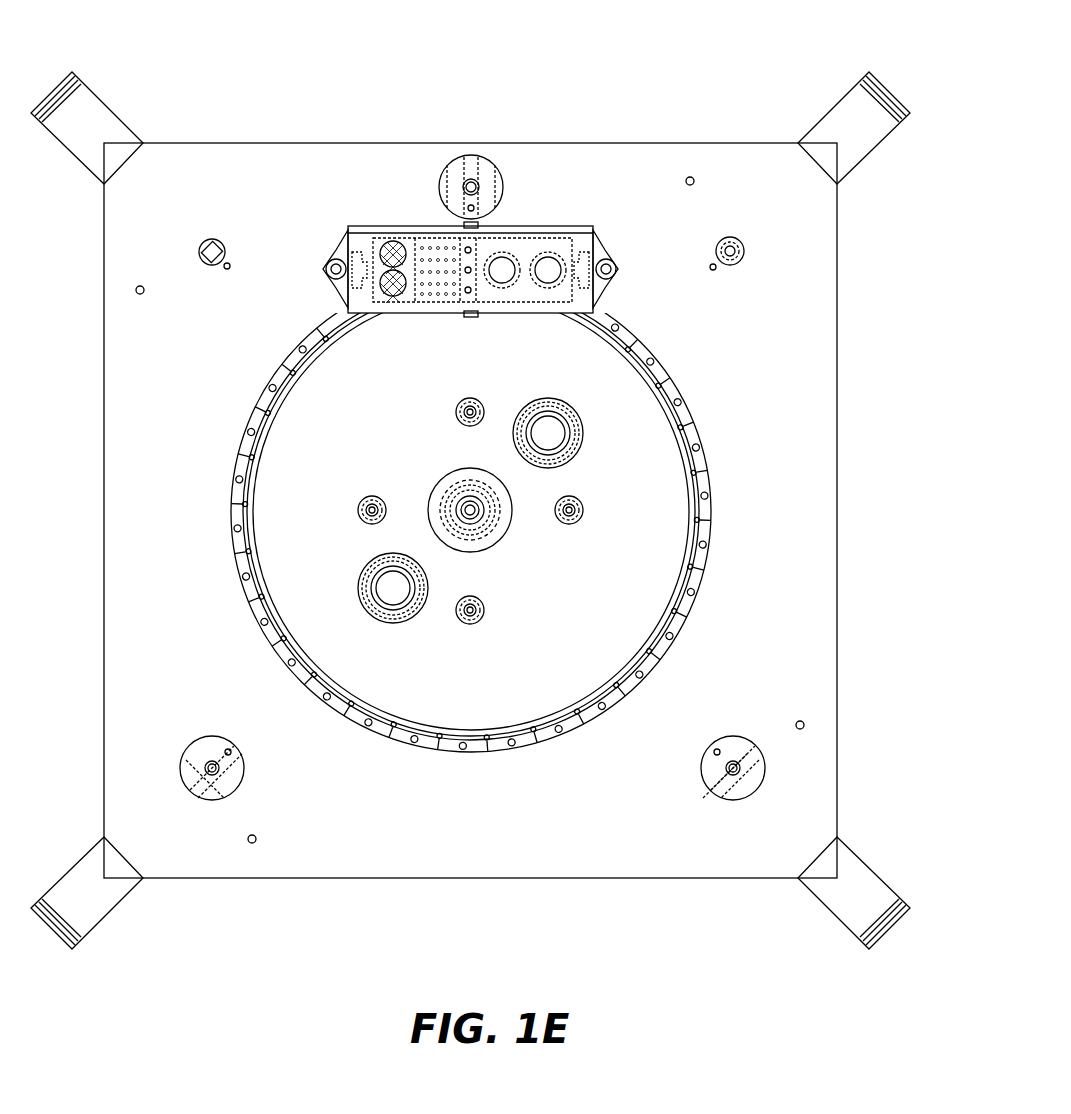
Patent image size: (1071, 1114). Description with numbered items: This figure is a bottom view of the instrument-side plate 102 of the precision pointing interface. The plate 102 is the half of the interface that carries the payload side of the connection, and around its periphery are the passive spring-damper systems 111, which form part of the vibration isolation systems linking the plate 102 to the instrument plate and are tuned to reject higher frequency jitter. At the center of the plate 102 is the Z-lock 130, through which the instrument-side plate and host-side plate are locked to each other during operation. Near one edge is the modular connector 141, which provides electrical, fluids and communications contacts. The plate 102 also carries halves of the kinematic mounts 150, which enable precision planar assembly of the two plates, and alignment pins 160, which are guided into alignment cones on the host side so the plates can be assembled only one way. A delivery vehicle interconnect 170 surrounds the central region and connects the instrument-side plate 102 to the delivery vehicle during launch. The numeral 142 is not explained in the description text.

The instrument-side plate 102 is at (770, 335).
The passive spring-damper system 111 is at (860, 112).
The Z-lock 130 is at (470, 510).
The modular connector 141 is at (375, 270).
The bearing assembly 142 is at (358, 578).
The kinematic mount 150 is at (180, 768).
The alignment pin 160 is at (358, 508).
The delivery vehicle interconnect 170 is at (712, 497).